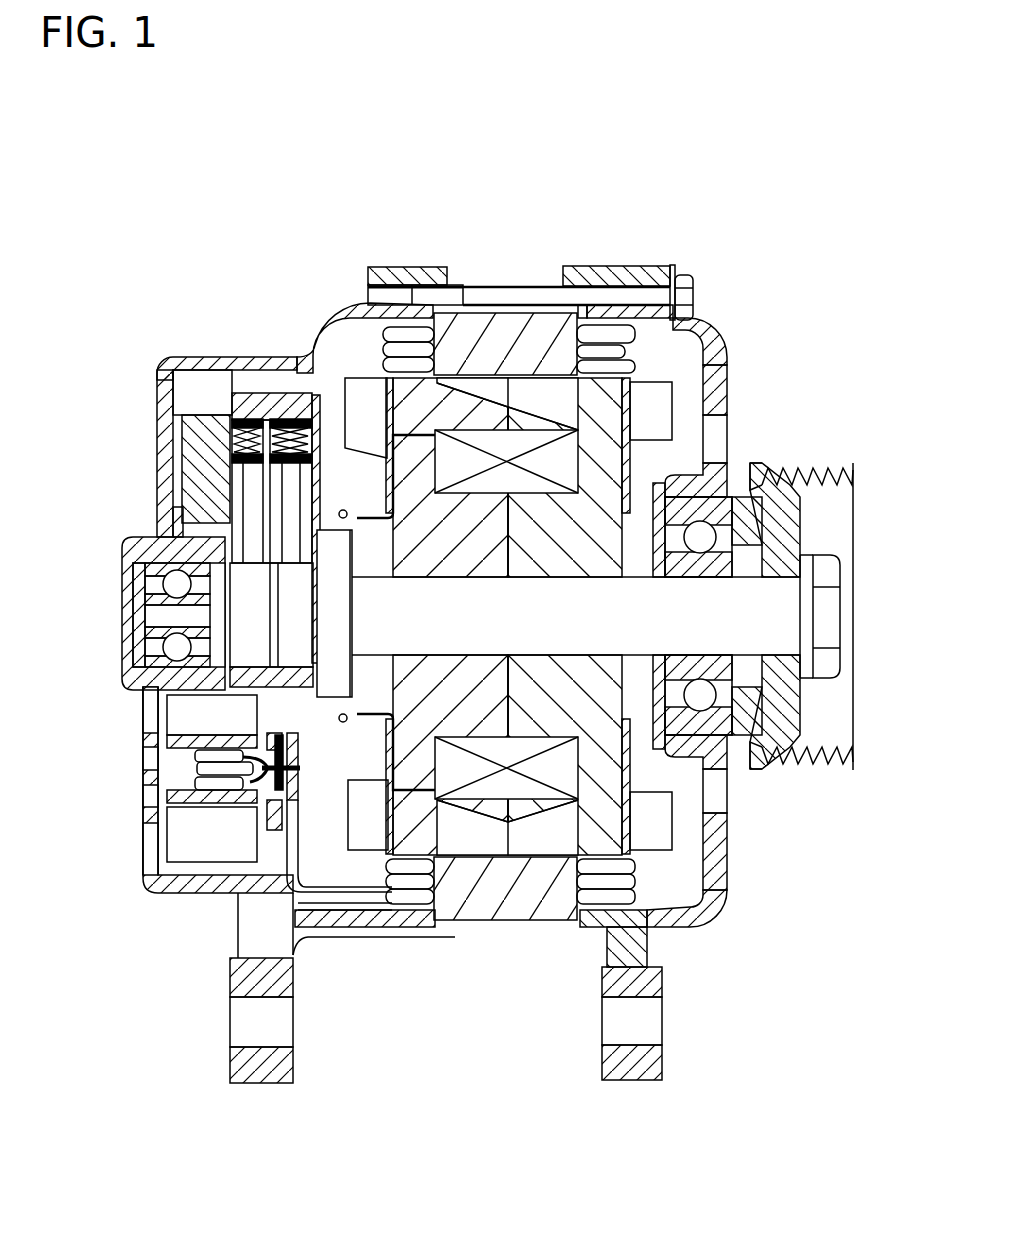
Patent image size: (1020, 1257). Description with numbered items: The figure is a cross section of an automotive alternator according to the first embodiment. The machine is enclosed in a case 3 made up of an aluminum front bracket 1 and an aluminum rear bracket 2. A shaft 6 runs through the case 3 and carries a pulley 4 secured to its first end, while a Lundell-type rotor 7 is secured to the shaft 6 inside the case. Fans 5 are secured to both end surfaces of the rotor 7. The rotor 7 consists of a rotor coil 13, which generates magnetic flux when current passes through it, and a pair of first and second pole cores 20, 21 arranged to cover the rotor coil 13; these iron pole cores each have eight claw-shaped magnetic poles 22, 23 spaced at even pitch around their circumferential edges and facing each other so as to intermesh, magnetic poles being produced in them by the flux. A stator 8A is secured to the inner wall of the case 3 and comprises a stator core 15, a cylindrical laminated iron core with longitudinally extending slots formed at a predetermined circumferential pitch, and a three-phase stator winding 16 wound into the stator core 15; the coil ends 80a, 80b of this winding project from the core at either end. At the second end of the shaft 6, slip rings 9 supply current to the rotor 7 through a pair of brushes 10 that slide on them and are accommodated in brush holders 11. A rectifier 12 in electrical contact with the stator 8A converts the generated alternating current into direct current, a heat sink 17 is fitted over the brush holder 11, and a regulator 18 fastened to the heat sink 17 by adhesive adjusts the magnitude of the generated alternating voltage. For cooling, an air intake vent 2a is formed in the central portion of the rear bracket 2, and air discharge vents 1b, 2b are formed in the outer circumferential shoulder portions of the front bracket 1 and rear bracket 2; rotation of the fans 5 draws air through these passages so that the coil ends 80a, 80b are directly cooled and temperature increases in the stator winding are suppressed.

The front bracket 1 is at (735, 858).
The air discharge vent 1b is at (704, 332).
The rear bracket 2 is at (173, 893).
The air intake vent 2a is at (152, 755).
The air discharge vent 2b is at (331, 315).
The case 3 is at (720, 913).
The pulley 4 is at (783, 470).
The fans 5 is at (657, 397).
The shaft 6 is at (725, 595).
The rotor 7 is at (484, 737).
The stator 8A is at (573, 515).
The slip rings 9 is at (250, 598).
The brushes 10 is at (250, 491).
The brush holders 11 is at (253, 405).
The rectifier 12 is at (212, 805).
The rotor coil 13 is at (500, 800).
The stator core 15 is at (496, 335).
The stator winding 16 is at (576, 360).
The heat sink 17 is at (170, 366).
The regulator 18 is at (215, 412).
The first pole core 20 is at (587, 832).
The second pole core 21 is at (418, 800).
The claw-shaped magnetic poles 22 is at (703, 323).
The claw-shaped magnetic poles 23 is at (405, 398).
The coil end 80a is at (607, 330).
The coil end 80b is at (419, 332).